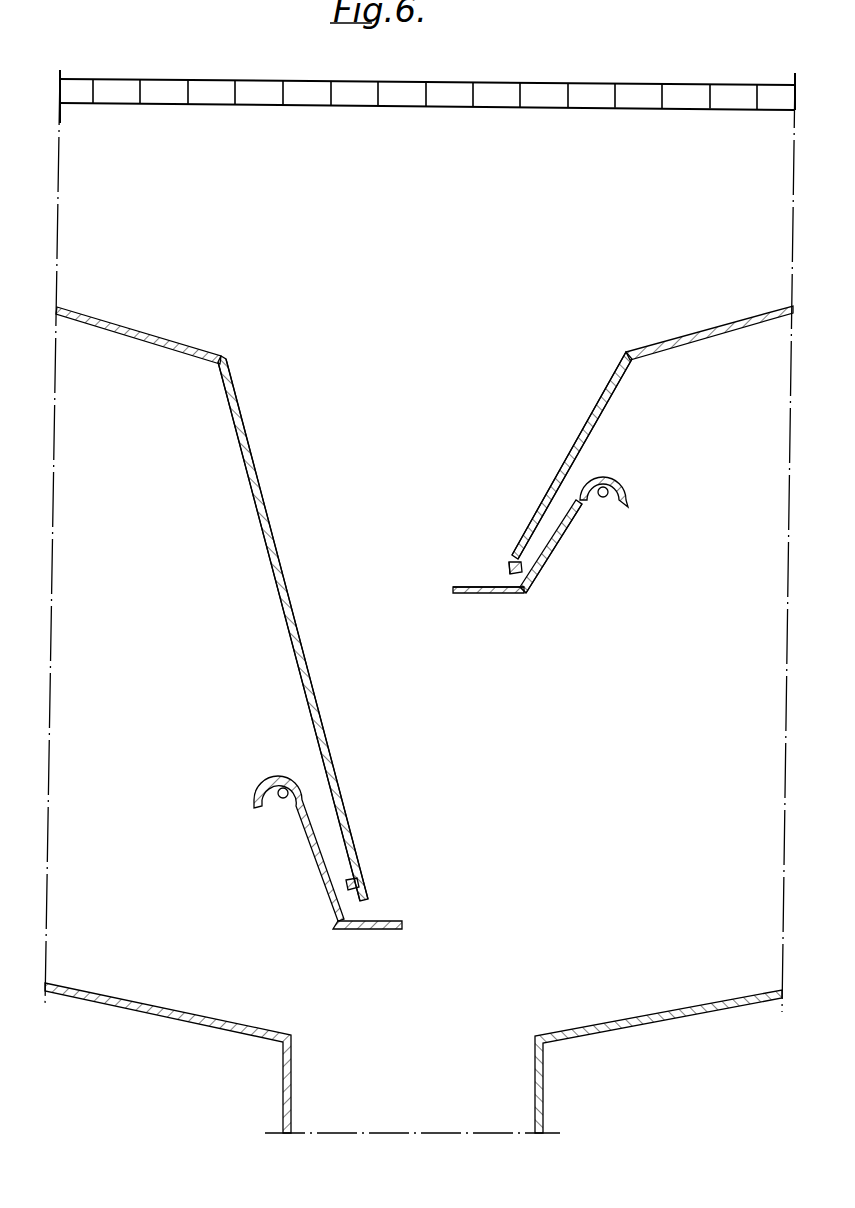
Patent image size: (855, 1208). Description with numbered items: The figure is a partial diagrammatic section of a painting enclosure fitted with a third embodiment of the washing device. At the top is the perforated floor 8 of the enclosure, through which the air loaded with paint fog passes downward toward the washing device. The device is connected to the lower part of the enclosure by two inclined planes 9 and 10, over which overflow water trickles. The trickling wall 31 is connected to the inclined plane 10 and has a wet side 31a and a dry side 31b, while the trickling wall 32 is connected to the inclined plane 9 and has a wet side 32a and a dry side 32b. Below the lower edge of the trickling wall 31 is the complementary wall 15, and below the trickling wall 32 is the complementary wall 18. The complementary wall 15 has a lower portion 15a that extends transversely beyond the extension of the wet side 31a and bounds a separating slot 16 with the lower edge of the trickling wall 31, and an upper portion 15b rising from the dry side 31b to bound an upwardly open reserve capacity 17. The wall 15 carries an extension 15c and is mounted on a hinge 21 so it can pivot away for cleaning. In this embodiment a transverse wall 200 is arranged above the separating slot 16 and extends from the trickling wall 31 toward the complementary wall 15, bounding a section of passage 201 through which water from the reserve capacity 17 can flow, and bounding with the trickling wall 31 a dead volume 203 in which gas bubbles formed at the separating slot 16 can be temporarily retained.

The floor 8 is at (444, 97).
The inclined plane 9 is at (176, 343).
The inclined plane 10 is at (690, 338).
The complementary wall 15 is at (541, 539).
The lower portion 15a is at (488, 594).
The upper portion 15b is at (578, 511).
The extension 15c is at (606, 478).
The separating slot 16 is at (501, 580).
The reserve capacity 17 is at (540, 538).
The complementary wall 18 is at (318, 876).
The hinge 21 is at (628, 491).
The trickling wall 31 is at (607, 392).
The wet side 31a is at (584, 430).
The dry side 31b is at (614, 383).
The trickling wall 32 is at (265, 516).
The wet side 32a is at (293, 616).
The dry side 32b is at (275, 582).
The transverse wall 200 is at (356, 882).
The section of passage 201 is at (530, 572).
The dead volume 203 is at (506, 568).